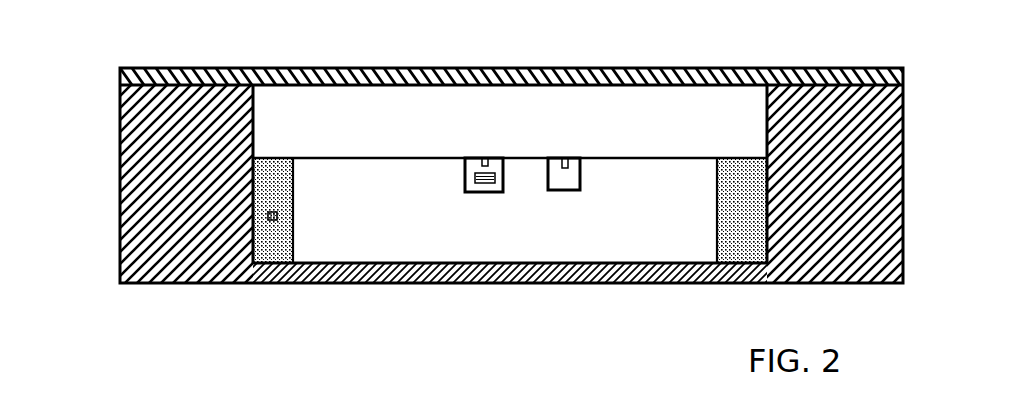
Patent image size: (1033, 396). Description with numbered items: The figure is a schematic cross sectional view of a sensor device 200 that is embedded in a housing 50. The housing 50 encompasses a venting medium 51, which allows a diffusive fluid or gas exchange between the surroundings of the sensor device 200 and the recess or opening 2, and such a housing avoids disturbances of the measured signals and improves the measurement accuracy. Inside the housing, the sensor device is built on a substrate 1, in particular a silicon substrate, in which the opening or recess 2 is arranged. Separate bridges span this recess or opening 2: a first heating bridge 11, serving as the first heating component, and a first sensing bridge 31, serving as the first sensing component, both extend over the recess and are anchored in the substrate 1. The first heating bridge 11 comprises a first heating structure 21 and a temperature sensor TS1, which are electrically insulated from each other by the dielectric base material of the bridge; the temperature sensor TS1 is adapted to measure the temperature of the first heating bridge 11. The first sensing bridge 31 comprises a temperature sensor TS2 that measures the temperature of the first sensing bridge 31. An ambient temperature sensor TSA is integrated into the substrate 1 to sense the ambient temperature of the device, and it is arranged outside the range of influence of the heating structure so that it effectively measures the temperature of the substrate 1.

The sensor device 200 is at (958, 346).
The housing 50 is at (120, 169).
The venting medium 51 is at (120, 77).
The opening or recess 2 is at (512, 232).
The substrate 1 is at (281, 186).
The ambient temperature sensor TSA is at (278, 214).
The first heating bridge 11 is at (464, 157).
The temperature sensor TS1 is at (484, 158).
The first heating structure 21 is at (475, 180).
The first sensing bridge 31 is at (582, 186).
The temperature sensor TS2 is at (567, 158).